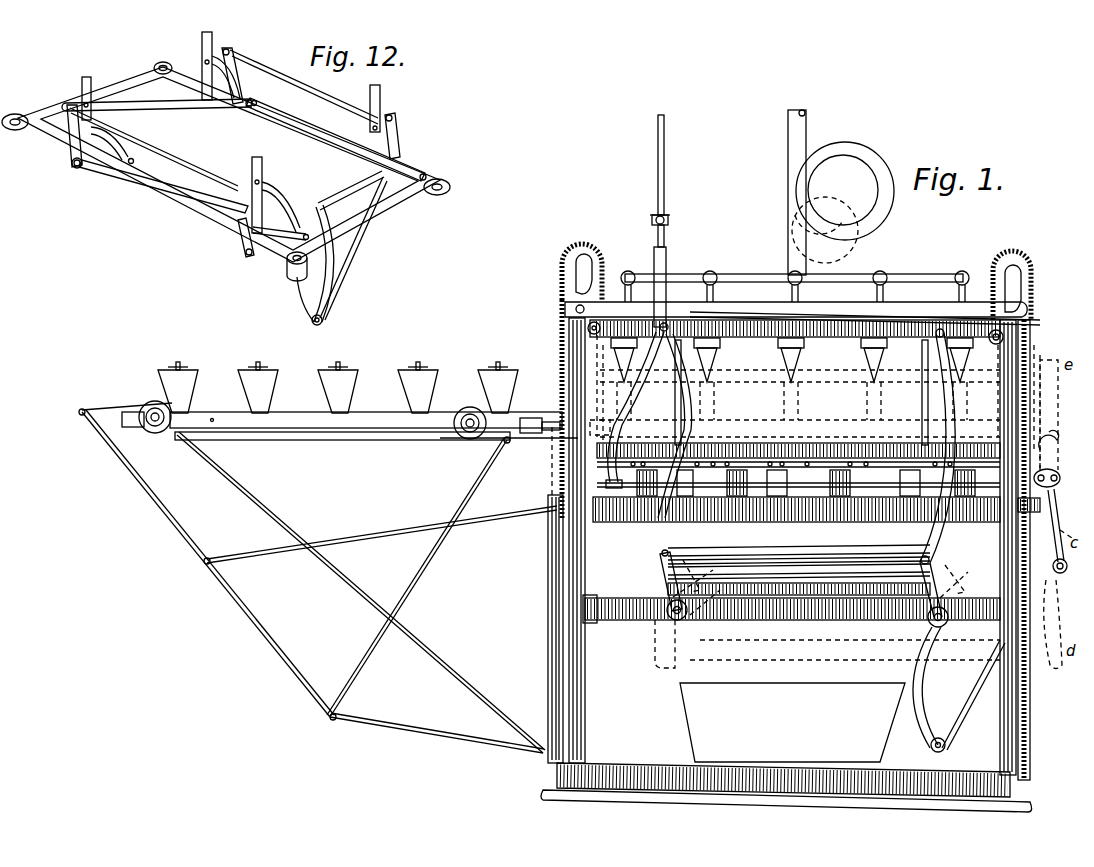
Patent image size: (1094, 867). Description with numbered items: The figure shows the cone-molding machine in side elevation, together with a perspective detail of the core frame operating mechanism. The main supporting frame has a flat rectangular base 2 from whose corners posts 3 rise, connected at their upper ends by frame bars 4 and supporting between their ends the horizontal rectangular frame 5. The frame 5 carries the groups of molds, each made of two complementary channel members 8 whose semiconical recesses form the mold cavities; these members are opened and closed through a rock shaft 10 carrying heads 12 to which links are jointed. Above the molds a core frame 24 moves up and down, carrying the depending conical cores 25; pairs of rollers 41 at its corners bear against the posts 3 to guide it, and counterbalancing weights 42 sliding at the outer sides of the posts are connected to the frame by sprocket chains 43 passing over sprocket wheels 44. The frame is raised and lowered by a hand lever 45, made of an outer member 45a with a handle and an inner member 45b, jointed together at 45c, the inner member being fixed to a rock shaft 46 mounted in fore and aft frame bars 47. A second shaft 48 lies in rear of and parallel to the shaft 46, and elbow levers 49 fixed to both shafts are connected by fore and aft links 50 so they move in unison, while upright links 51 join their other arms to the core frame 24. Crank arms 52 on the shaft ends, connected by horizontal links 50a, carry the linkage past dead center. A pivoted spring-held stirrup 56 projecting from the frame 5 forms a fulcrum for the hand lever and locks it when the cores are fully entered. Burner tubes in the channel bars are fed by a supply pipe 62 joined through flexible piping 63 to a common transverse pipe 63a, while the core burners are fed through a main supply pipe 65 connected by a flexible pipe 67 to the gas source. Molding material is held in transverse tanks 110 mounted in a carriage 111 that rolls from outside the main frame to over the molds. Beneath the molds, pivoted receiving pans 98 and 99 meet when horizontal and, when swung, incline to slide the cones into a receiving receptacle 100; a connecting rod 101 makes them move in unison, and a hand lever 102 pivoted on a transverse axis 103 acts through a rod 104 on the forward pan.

In FIG. 1, the base 2 is at (625, 766).
In FIG. 1, the post 3 is at (569, 336).
In FIG. 1, the frame bar 4 is at (858, 318).
In FIG. 1, the horizontal rectangular frame 5 is at (796, 510).
In FIG. 1, the complementary member 8 is at (746, 447).
In FIG. 1, the rock shaft 10 is at (1056, 472).
In FIG. 1, the head 12 is at (1064, 482).
In FIG. 1, the frame 24 is at (740, 320).
In FIG. 1, the conical mold core 25 is at (624, 362).
In FIG. 1, the roller 41 is at (592, 345).
In FIG. 1, the counterbalancing weight 42 is at (548, 580).
In FIG. 1, the sprocket chain 43 is at (569, 395).
In FIG. 1, the sprocket wheel 44 is at (572, 250).
In FIG. 12, the hand lever 45 is at (330, 248).
In FIG. 12, the outer member 45a is at (356, 271).
In FIG. 1, the outer member 45a is at (968, 685).
In FIG. 12, the inner member 45b is at (300, 300).
In FIG. 1, the inner member 45b is at (930, 735).
In FIG. 12, the joint 45c is at (311, 321).
In FIG. 1, the joint 45c is at (931, 748).
In FIG. 12, the rock shaft 46 is at (199, 116).
In FIG. 1, the rock shaft 46 is at (930, 626).
In FIG. 12, the fore and aft frame bar 47 is at (178, 206).
In FIG. 12, the second shaft 48 is at (75, 169).
In FIG. 1, the second shaft 48 is at (669, 617).
In FIG. 12, the elbow lever 49 is at (100, 137).
In FIG. 1, the elbow lever 49 is at (688, 565).
In FIG. 12, the fore and aft link 50 is at (312, 136).
In FIG. 1, the fore and aft link 50 is at (842, 572).
In FIG. 12, the horizontal link 50a is at (303, 88).
In FIG. 1, the horizontal link 50a is at (795, 565).
In FIG. 12, the upright link 51 is at (213, 38).
In FIG. 1, the upright link 51 is at (682, 400).
In FIG. 12, the crank arm 52 is at (235, 68).
In FIG. 1, the crank arm 52 is at (660, 568).
In FIG. 1, the stirrup 56 is at (1042, 505).
In FIG. 1, the supply pipe 62 is at (835, 472).
In FIG. 1, the flexible piping 63 is at (666, 260).
In FIG. 1, the common transverse pipe 63a is at (664, 220).
In FIG. 1, the main supply pipe 65 is at (795, 278).
In FIG. 1, the flexible pipe 67 is at (862, 162).
In FIG. 1, the receiving pan 98 is at (799, 546).
In FIG. 1, the receiving pan 99 is at (799, 555).
In FIG. 1, the receiving receptacle 100 is at (792, 722).
In FIG. 1, the connecting rod 101 is at (799, 583).
In FIG. 1, the hand lever 102 is at (1061, 575).
In FIG. 1, the transverse axis 103 is at (1073, 558).
In FIG. 1, the rod 104 is at (1080, 620).
In FIG. 1, the tank 110 is at (196, 390).
In FIG. 1, the carriage 111 is at (342, 418).